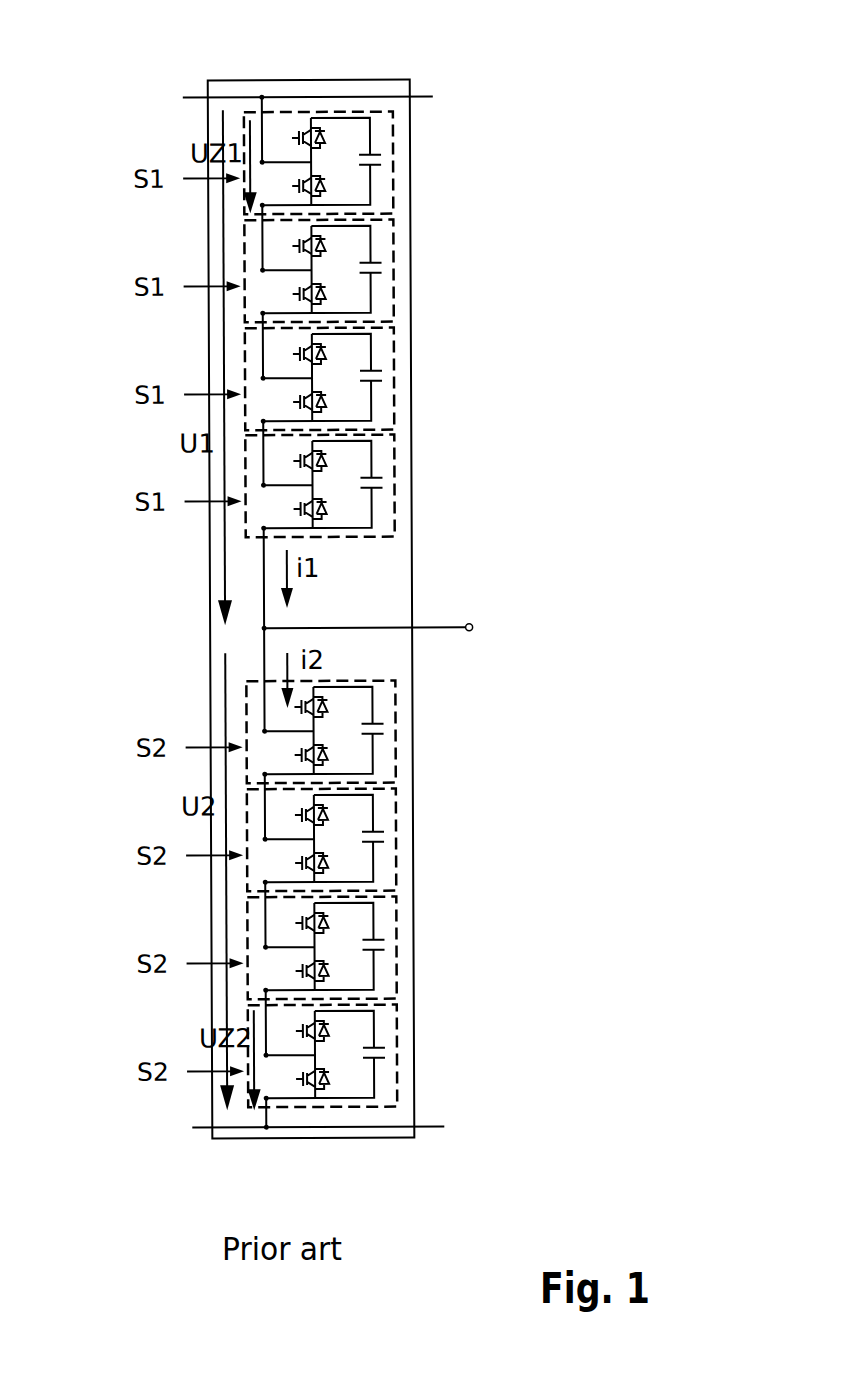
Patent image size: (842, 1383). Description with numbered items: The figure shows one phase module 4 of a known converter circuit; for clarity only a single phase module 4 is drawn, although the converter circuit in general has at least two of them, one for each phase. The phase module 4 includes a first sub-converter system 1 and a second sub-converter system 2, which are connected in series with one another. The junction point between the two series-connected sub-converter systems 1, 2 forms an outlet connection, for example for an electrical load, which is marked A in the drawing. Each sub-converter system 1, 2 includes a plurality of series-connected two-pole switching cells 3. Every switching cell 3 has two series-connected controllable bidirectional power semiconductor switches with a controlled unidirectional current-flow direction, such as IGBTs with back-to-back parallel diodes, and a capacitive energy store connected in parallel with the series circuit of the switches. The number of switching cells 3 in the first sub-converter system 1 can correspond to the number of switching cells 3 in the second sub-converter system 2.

The first sub-converter system 1 is at (219, 337).
The second sub-converter system 2 is at (215, 919).
The switching cell 3 is at (395, 160).
The phase module 4 is at (412, 548).
The AC output terminal A is at (471, 625).